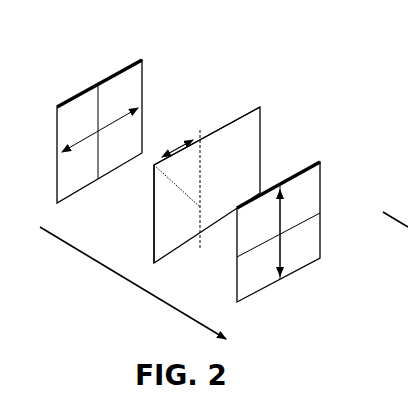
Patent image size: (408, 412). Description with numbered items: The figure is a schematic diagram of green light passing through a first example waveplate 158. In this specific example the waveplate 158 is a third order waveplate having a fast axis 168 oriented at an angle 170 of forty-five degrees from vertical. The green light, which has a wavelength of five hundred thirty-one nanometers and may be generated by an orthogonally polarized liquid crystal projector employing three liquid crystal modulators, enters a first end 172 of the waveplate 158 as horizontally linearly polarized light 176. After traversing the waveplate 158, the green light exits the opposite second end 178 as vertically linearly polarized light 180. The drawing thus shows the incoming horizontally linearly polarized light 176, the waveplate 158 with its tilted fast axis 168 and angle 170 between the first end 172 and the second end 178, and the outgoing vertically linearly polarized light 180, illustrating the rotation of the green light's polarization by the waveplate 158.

The waveplate 158 is at (261, 118).
The fast axis 168 is at (153, 170).
The angle 170 is at (165, 152).
The first end 172 is at (227, 105).
The horizontally linearly polarized light 176 is at (143, 73).
The second end 178 is at (293, 150).
The vertically linearly polarized light 180 is at (322, 183).